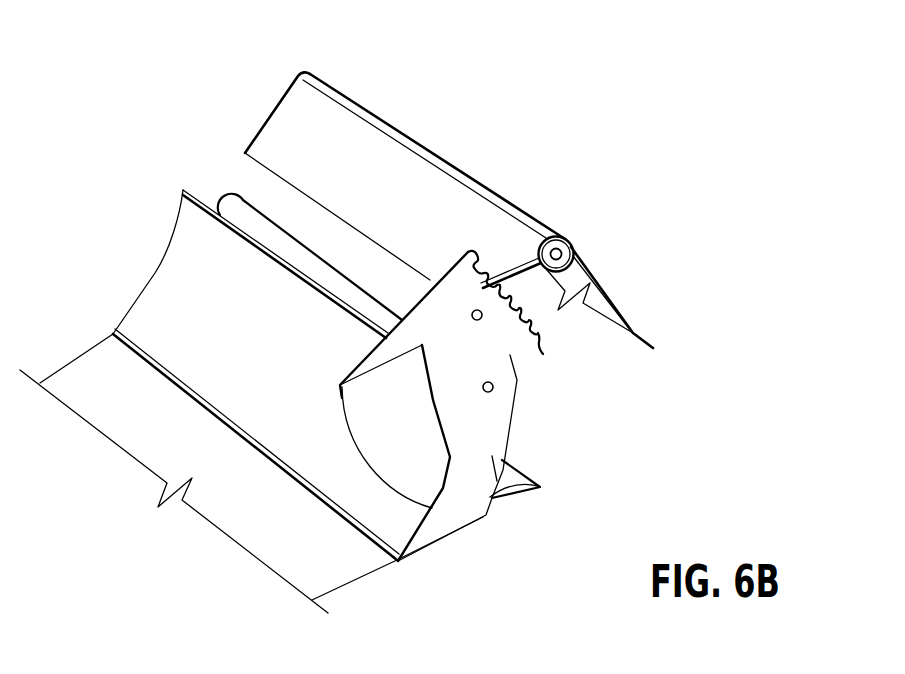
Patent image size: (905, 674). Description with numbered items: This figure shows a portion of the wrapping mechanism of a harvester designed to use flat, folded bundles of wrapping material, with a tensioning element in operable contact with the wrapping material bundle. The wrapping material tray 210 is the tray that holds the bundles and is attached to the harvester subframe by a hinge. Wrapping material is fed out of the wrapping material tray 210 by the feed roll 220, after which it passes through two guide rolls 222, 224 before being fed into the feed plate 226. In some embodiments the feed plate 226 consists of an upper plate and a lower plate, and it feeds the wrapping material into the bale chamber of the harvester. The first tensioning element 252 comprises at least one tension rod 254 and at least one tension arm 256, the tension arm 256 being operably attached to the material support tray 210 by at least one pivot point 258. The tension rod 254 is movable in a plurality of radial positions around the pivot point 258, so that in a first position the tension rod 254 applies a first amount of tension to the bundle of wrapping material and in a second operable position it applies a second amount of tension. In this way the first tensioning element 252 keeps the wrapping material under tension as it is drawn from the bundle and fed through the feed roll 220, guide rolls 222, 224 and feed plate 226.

The wrapping material tray 210 is at (512, 111).
The feed roll 220 is at (302, 72).
The guide roll 222 is at (238, 199).
The guide roll 224 is at (237, 207).
The feed plate 226 is at (157, 272).
The first tensioning element 252 is at (540, 350).
The tension rod 254 is at (522, 490).
The tension arm 256 is at (425, 295).
The pivot point 258 is at (432, 508).